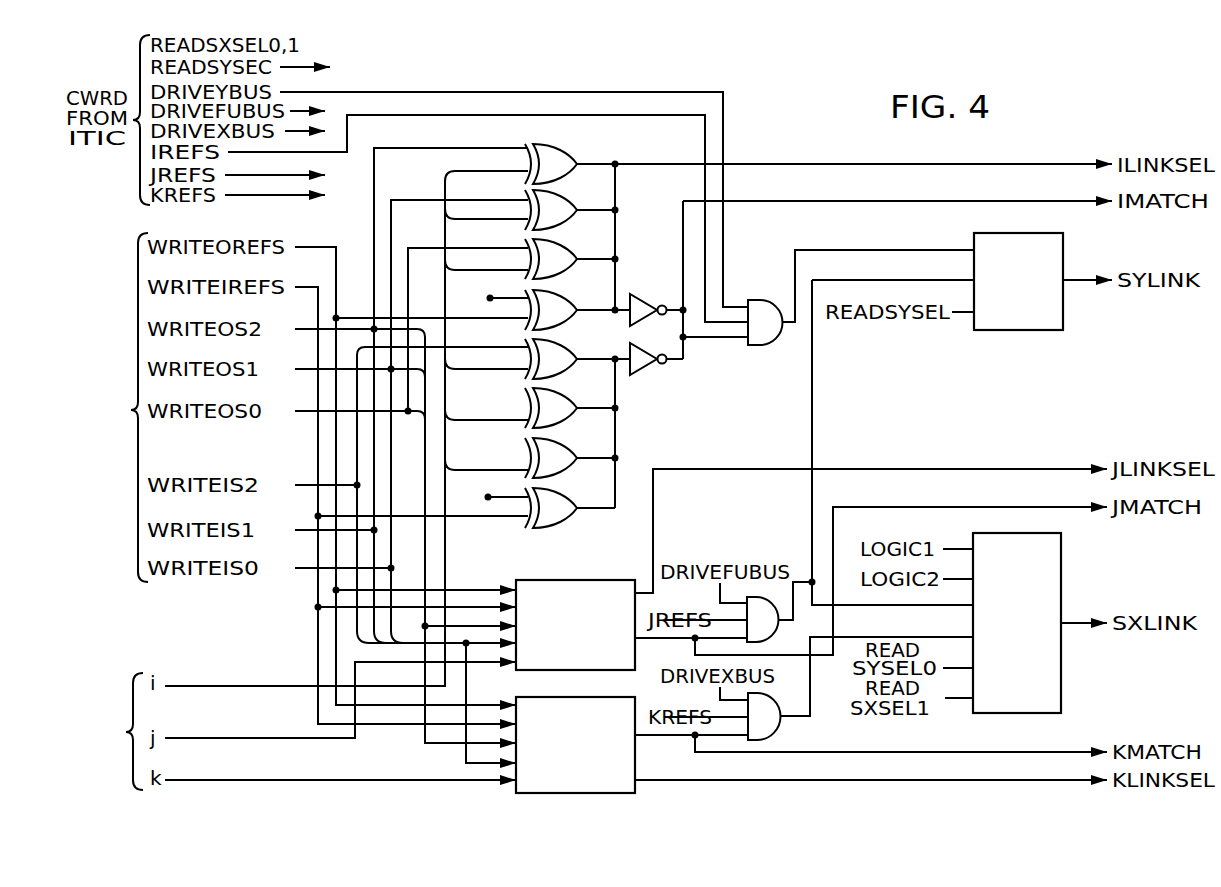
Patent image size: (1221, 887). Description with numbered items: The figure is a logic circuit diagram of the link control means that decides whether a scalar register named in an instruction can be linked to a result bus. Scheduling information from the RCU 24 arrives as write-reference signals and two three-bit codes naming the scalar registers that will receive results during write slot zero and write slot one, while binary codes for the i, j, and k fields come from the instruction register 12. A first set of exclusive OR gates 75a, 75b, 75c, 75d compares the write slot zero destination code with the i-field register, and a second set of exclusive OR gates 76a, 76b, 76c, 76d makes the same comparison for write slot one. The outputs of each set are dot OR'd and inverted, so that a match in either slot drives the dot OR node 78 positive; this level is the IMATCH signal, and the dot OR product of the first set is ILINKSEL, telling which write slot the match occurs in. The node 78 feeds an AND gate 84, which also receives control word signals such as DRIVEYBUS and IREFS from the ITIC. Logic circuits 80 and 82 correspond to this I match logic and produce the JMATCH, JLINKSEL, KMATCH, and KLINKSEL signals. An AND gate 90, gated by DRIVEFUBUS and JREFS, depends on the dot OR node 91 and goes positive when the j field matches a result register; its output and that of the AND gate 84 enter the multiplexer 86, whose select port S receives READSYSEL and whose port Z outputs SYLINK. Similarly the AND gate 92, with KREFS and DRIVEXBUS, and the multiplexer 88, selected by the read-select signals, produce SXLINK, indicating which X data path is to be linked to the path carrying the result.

The instruction register (IREG) 12 is at (97, 731).
The RCU 24 is at (106, 407).
The exclusive OR gate 75a is at (561, 150).
The exclusive OR gate 75b is at (561, 196).
The exclusive OR gate 75c is at (561, 245).
The exclusive OR gate 75d is at (561, 296).
The exclusive OR gate 76a is at (561, 345).
The exclusive OR gate 76b is at (561, 394).
The exclusive OR gate 76c is at (561, 444).
The exclusive OR gate 76d is at (561, 494).
The dot OR node 78 is at (692, 338).
The logic circuit 80 is at (578, 580).
The logic circuit 82 is at (580, 697).
The AND gate 84 is at (768, 298).
The multiplexer 86 is at (1012, 330).
The multiplexer 88 is at (1063, 568).
The AND gate 90 is at (772, 640).
The dot OR node 91 is at (690, 640).
The AND gate 92 is at (773, 737).